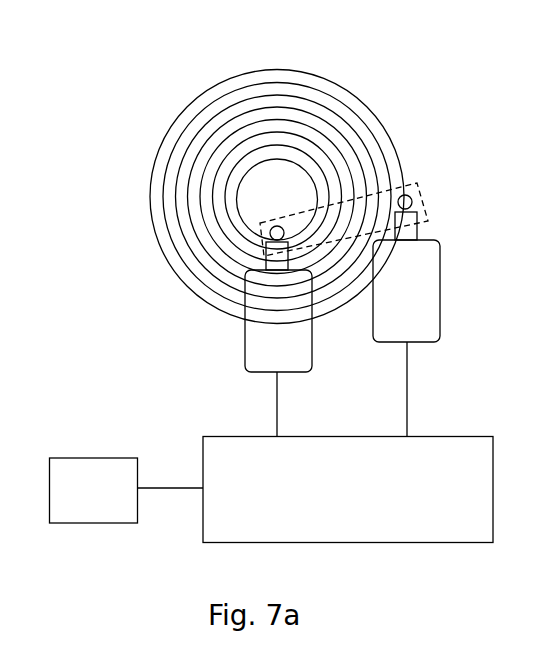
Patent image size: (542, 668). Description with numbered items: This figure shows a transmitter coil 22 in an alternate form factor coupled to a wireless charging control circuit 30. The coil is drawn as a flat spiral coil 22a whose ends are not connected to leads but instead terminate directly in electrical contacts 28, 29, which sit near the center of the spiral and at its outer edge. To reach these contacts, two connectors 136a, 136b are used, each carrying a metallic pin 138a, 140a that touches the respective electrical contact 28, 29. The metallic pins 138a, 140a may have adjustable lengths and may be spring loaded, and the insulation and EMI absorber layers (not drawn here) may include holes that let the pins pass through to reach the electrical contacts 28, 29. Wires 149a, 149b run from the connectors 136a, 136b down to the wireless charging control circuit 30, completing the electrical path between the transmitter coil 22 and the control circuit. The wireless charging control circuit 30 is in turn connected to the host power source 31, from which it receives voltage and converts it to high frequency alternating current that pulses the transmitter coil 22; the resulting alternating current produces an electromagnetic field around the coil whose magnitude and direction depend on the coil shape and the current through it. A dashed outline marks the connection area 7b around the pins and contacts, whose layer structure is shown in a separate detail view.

The transmitter coil 22 is at (254, 197).
The flat spiral coil 22a is at (185, 110).
The connection area 7b is at (413, 184).
The electrical contact 28 is at (284, 222).
The electrical contact 29 is at (411, 200).
The metallic pin 138a is at (264, 256).
The metallic pin 140a is at (410, 234).
The connector 136a is at (245, 349).
The connector 136b is at (442, 296).
The wire 149a is at (283, 405).
The wire 149b is at (411, 405).
The wireless charging control circuit 30 is at (343, 544).
The power source 31 is at (92, 524).